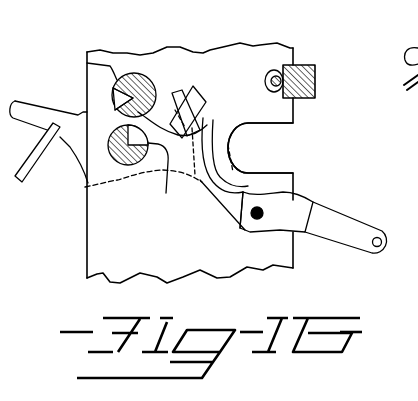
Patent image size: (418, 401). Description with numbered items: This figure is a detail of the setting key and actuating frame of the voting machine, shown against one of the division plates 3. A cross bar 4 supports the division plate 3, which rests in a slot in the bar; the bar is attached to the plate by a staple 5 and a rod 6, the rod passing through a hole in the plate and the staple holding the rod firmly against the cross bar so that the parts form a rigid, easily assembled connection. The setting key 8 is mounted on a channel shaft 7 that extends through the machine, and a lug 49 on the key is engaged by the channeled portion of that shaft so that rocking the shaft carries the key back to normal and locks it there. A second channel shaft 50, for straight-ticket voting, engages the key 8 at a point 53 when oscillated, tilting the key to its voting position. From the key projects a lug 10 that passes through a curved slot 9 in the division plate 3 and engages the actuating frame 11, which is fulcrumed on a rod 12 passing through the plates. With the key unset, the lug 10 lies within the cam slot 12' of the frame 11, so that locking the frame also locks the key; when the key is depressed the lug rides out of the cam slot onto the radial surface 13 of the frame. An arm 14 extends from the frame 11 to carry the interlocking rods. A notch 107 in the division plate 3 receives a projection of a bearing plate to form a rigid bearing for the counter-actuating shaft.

The division plate 3 is at (197, 67).
The cross bar 4 is at (315, 70).
The staple 5 is at (266, 76).
The rod 6 is at (268, 85).
The channel shaft 7 is at (130, 150).
The setting key 8 is at (75, 160).
The curved slot 9 is at (182, 93).
The lug 10 is at (208, 118).
The actuating frame 11 is at (232, 207).
The rod 12 is at (262, 227).
The cam slot 12' is at (225, 202).
The radial surface 13 is at (195, 98).
The arm 14 is at (327, 223).
The lug 49 is at (162, 183).
The channel shaft 50 is at (87, 63).
The point 53 is at (132, 98).
The notch 107 is at (264, 148).